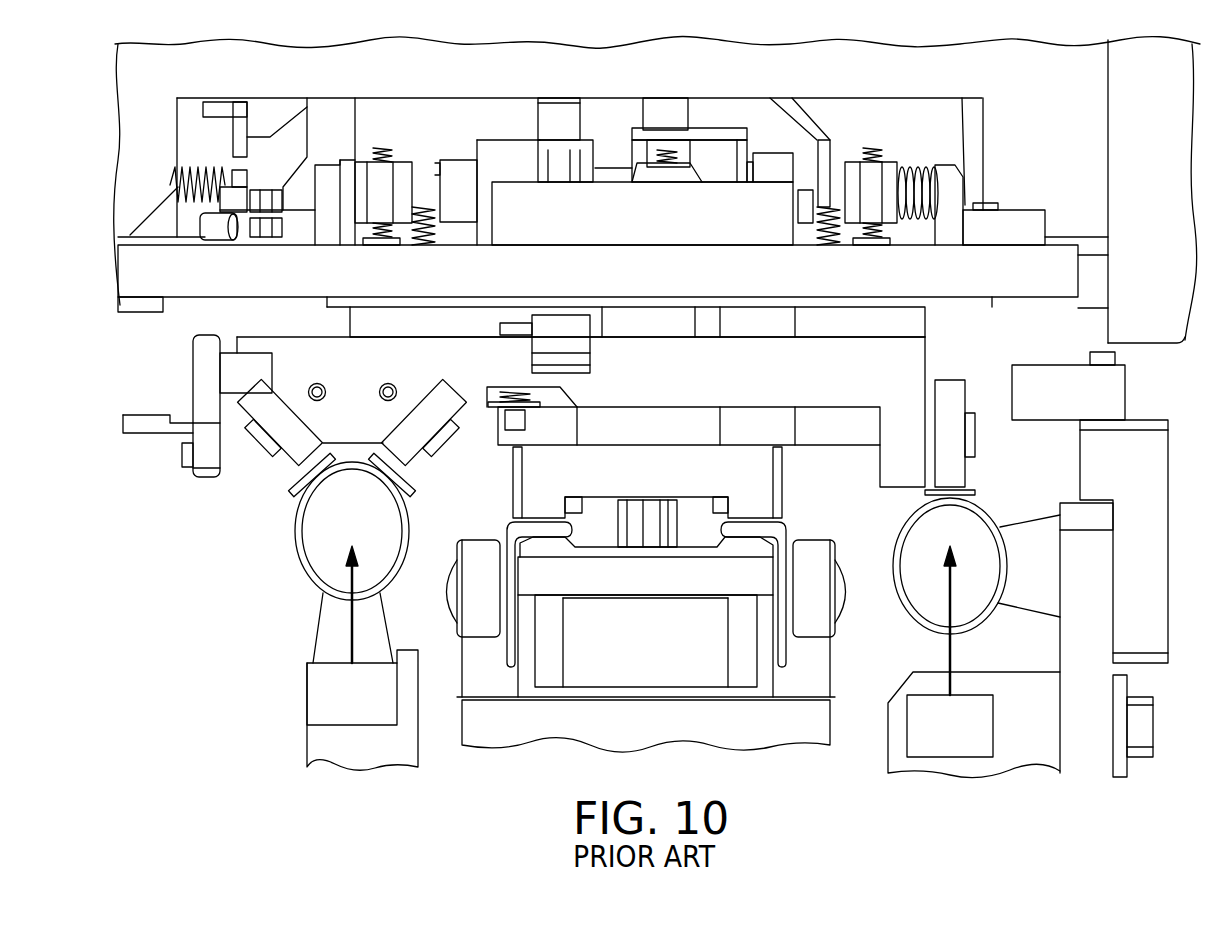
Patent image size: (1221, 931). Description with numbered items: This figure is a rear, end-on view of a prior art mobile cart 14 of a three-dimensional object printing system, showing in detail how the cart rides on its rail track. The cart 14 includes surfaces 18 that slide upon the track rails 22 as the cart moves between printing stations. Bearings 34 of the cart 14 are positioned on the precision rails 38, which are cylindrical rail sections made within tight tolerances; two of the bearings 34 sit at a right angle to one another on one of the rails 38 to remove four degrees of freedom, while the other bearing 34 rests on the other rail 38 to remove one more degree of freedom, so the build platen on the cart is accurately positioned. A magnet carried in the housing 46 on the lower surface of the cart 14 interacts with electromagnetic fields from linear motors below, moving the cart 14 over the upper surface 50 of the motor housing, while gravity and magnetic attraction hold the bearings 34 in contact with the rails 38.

The cart 14 is at (983, 141).
The bearings 34 is at (285, 390).
The housing 46 is at (645, 680).
The surfaces 18 is at (540, 518).
The track rails 22 is at (457, 665).
The precision rails 38 is at (296, 553).
The upper surface 50 is at (645, 700).